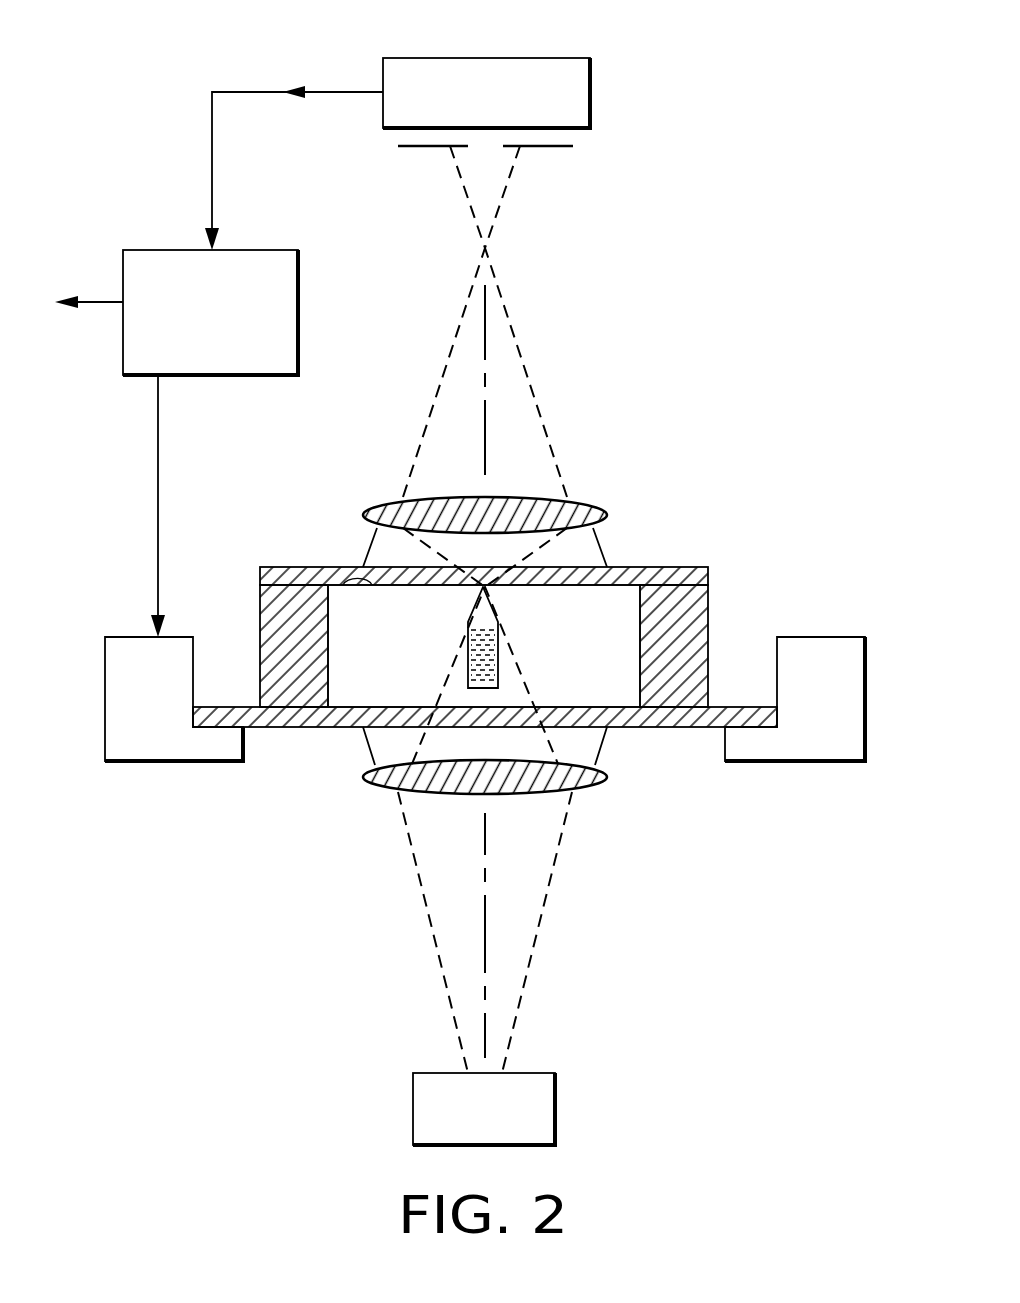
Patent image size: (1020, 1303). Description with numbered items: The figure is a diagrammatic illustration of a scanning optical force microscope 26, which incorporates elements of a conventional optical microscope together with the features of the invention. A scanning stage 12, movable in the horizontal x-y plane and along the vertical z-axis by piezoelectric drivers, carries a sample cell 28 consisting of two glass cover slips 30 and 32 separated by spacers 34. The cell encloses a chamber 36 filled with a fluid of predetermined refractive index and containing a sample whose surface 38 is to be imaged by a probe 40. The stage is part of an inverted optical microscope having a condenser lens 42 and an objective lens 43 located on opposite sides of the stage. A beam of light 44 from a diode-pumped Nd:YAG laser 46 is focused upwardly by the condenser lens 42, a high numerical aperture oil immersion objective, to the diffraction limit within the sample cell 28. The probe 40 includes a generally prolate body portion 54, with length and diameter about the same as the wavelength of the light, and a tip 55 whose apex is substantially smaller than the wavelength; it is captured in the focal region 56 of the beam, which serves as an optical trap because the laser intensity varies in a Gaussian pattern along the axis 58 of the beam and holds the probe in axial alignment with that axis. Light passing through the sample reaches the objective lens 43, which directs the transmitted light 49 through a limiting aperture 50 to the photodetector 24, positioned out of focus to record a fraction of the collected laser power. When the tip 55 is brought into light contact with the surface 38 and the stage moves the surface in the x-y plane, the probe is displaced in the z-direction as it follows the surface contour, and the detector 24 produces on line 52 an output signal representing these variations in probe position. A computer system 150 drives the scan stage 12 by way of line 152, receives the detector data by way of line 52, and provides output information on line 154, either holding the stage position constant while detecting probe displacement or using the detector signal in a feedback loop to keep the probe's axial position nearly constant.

The scanning stage 12 is at (172, 772).
The photodetector 24 is at (592, 90).
The scanning optical force microscope 26 is at (502, 589).
The sample cell 28 is at (672, 548).
The glass cover slip 30 is at (283, 567).
The glass cover slip 32 is at (292, 730).
The spacers 34 is at (708, 620).
The chamber 36 is at (357, 690).
The surface 38 is at (345, 587).
The probe 40 is at (479, 644).
The condenser lens 42 is at (583, 795).
The objective lens 43 is at (587, 500).
The beam of light 44 is at (497, 953).
The laser 46 is at (542, 1103).
The transmitted light 49 is at (502, 357).
The limiting aperture 50 is at (413, 148).
The detector output line 52 is at (342, 90).
The body portion 54 is at (467, 676).
The probe tip 55 is at (480, 590).
The focal region 56 is at (450, 643).
The beam axis 58 is at (468, 992).
The computer system 150 is at (298, 312).
The scan control line 152 is at (158, 450).
The output line 154 is at (98, 305).